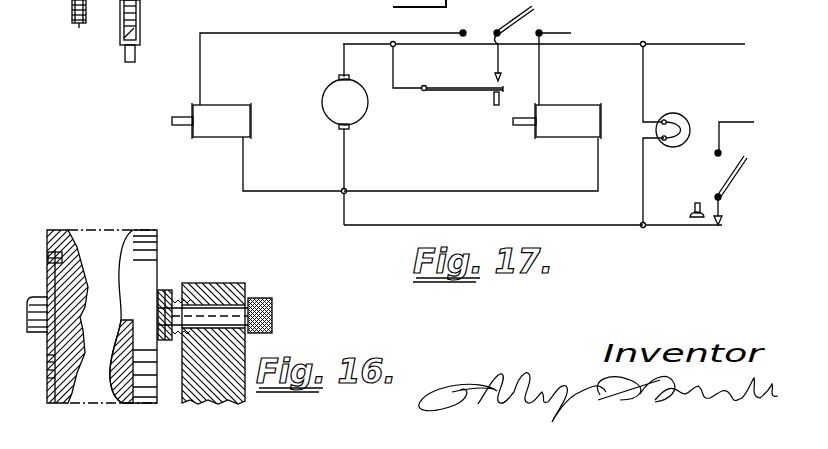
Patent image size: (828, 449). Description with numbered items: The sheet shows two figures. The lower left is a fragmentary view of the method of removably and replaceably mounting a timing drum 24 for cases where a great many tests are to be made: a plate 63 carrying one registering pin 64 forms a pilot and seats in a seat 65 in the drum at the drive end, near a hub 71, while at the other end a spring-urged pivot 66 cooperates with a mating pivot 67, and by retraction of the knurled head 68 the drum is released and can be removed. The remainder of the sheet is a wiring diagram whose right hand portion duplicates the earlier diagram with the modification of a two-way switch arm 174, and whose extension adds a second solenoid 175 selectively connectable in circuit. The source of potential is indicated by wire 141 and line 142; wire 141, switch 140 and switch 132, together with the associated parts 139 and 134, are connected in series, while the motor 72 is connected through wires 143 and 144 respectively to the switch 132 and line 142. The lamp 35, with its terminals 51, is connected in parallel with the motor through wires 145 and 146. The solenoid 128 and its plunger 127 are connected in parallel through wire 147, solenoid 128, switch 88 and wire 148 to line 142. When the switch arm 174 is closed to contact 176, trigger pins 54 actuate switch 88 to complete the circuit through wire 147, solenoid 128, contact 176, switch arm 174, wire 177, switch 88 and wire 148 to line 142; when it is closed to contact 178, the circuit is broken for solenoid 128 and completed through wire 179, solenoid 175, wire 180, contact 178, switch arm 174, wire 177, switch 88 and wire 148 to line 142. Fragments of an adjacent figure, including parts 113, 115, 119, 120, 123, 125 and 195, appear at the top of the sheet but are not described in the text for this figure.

In FIG. 17, the rack member 113 is at (71, 10).
In FIG. 17, the pin 115 is at (79, 28).
In FIG. 17, the slide member 119 is at (136, 12).
In FIG. 17, the guide 120 is at (120, 22).
In FIG. 17, the stem 123 is at (131, 58).
In FIG. 17, the spring 125 is at (120, 45).
In FIG. 17, the lever 195 is at (207, 6).
In FIG. 17, the wire 180 is at (220, 33).
In FIG. 17, the contact 178 is at (477, 22).
In FIG. 17, the switch arm 174 is at (536, 11).
In FIG. 17, the contact 176 is at (572, 33).
In FIG. 17, the line 142 is at (718, 44).
In FIG. 17, the wire 144 is at (343, 62).
In FIG. 17, the motor 72 is at (335, 108).
In FIG. 17, the wire 148 is at (407, 91).
In FIG. 17, the trigger pin 54 is at (495, 94).
In FIG. 17, the wire 177 is at (500, 62).
In FIG. 17, the switch 88 is at (494, 77).
In FIG. 17, the wire 146 is at (642, 60).
In FIG. 17, the lamp 35 is at (668, 118).
In FIG. 17, the lamp terminal 51 is at (658, 140).
In FIG. 17, the wire 145 is at (640, 188).
In FIG. 17, the wire 141 is at (728, 121).
In FIG. 17, the switch 140 is at (734, 176).
In FIG. 17, the switch 132 is at (723, 219).
In FIG. 17, the push button 139 is at (696, 203).
In FIG. 17, the conductor 134 is at (694, 228).
In FIG. 17, the wire 143 is at (618, 228).
In FIG. 17, the wire 179 is at (276, 191).
In FIG. 17, the wire 147 is at (538, 191).
In FIG. 17, the second solenoid 175 is at (228, 137).
In FIG. 17, the solenoid 128 is at (563, 111).
In FIG. 17, the plunger 127 is at (172, 122).
In FIG. 16, the registering pin 64 is at (57, 258).
In FIG. 16, the plate 63 is at (50, 363).
In FIG. 16, the seat 65 is at (37, 268).
In FIG. 16, the hub 71 is at (30, 326).
In FIG. 16, the cam 24 is at (152, 240).
In FIG. 16, the mating pivot 67 is at (165, 293).
In FIG. 16, the spring-urged pivot 66 is at (172, 302).
In FIG. 16, the knurled head 68 is at (265, 299).